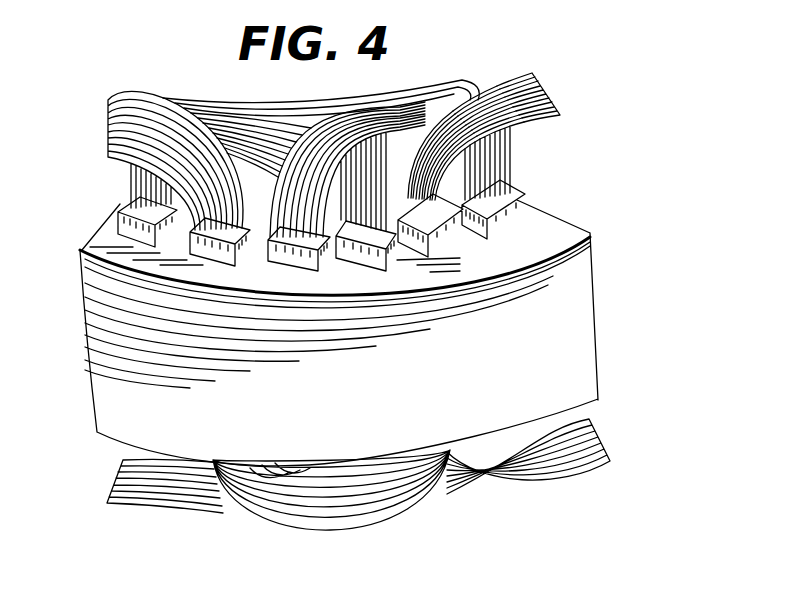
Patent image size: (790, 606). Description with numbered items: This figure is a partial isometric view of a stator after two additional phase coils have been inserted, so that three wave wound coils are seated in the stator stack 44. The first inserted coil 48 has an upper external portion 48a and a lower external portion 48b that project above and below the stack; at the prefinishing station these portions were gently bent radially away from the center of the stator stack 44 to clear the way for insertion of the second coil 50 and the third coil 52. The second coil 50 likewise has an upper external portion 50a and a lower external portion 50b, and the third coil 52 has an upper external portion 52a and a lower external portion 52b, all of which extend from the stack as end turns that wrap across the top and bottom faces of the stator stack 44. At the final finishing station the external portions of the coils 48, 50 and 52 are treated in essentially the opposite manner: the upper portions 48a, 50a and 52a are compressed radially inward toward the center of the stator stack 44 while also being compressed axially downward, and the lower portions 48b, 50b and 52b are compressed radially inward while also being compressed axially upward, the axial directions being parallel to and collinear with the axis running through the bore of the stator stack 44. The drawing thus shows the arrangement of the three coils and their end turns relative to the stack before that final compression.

The stator stack 44 is at (598, 323).
The inserted coil 48 is at (550, 97).
The upper external portion of the first coil 48a is at (150, 93).
The lower external portion of the first coil 48b is at (369, 533).
The second coil 50 is at (483, 83).
The upper external portion of the second coil 50a is at (433, 87).
The lower external portion of the second coil 50b is at (177, 517).
The third coil 52 is at (362, 100).
The upper external portion of the third coil 52a is at (230, 100).
The lower external portion of the third coil 52b is at (490, 497).